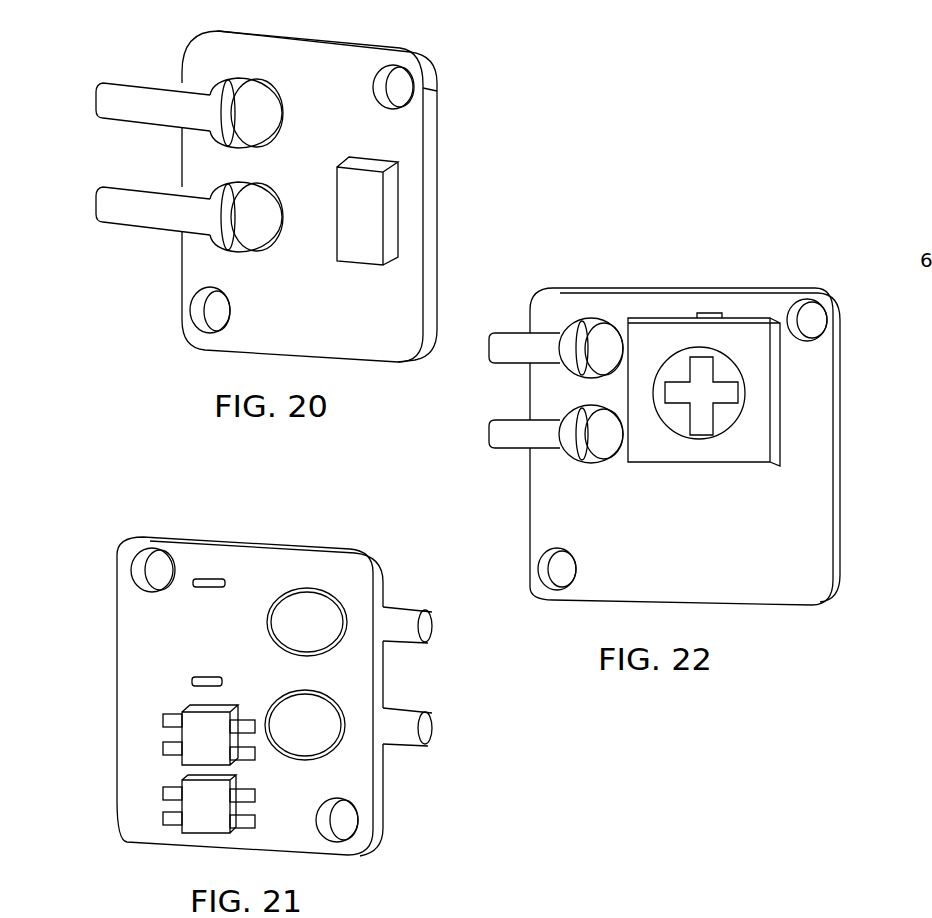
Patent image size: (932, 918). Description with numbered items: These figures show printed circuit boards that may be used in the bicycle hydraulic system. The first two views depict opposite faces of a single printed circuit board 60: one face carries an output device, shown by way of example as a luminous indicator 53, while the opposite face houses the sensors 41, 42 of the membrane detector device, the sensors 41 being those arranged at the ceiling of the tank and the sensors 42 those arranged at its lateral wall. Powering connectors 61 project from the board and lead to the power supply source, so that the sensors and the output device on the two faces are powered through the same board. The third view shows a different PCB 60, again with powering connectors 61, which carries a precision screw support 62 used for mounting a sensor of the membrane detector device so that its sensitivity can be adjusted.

In FIG. 20, the printed circuit board 60 is at (450, 113).
In FIG. 21, the printed circuit board 60 is at (256, 537).
In FIG. 22, the printed circuit board 60 is at (684, 277).
In FIG. 20, the powering connectors 61 is at (173, 215).
In FIG. 21, the powering connectors 61 is at (410, 742).
In FIG. 22, the powering connectors 61 is at (517, 428).
In FIG. 20, the luminous indicator 53 is at (370, 212).
In FIG. 22, the precision screw support 62 is at (728, 438).
In FIG. 21, the sensor 41 is at (200, 742).
In FIG. 21, the sensor 42 is at (205, 812).